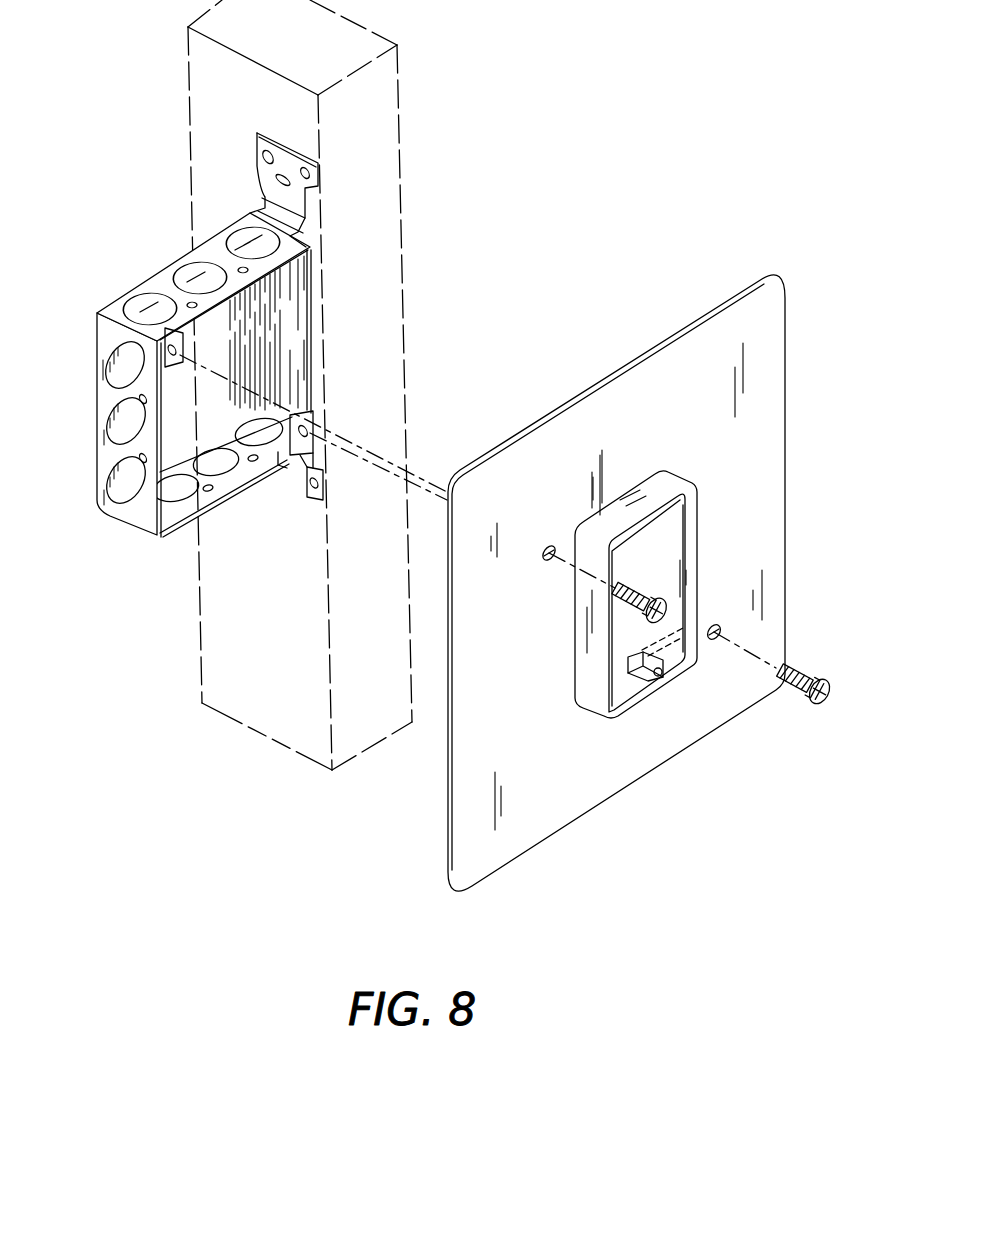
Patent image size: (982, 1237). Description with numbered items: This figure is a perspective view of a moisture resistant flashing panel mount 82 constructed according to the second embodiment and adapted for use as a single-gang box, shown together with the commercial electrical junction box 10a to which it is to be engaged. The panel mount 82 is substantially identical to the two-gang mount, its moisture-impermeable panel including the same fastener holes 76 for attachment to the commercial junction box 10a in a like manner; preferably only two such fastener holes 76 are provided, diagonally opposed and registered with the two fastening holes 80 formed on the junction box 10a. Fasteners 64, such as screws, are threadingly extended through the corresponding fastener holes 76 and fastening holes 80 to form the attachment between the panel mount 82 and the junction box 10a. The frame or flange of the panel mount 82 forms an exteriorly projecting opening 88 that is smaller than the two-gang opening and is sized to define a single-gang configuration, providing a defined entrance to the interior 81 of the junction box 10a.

The commercial junction box 10a is at (177, 402).
The fastening holes 80 is at (176, 346).
The interior 81 is at (175, 430).
The flashing panel mount 82 is at (653, 540).
The exteriorly projecting opening 88 is at (650, 553).
The fastener holes 76 is at (549, 547).
The fasteners 64 is at (630, 612).